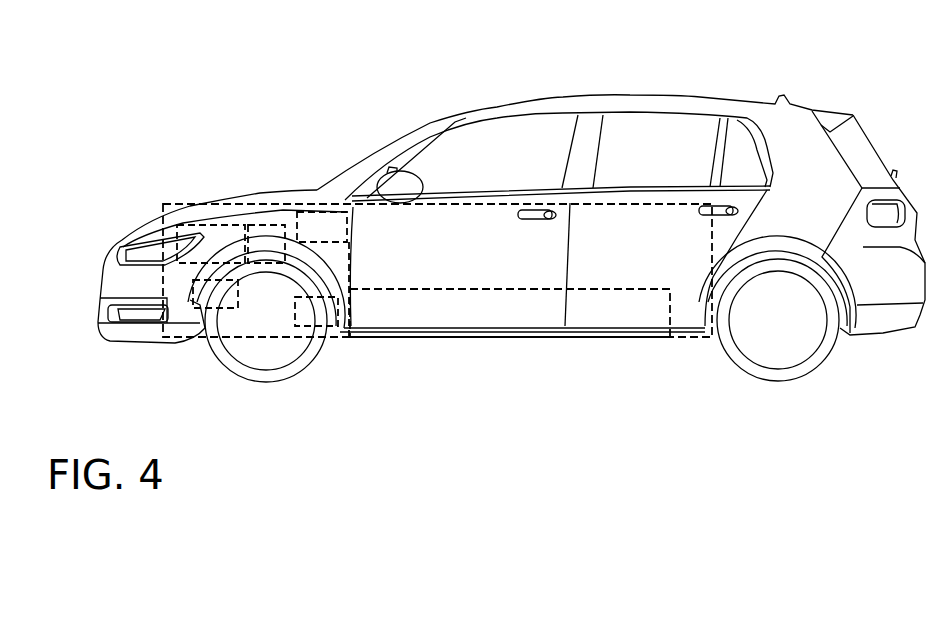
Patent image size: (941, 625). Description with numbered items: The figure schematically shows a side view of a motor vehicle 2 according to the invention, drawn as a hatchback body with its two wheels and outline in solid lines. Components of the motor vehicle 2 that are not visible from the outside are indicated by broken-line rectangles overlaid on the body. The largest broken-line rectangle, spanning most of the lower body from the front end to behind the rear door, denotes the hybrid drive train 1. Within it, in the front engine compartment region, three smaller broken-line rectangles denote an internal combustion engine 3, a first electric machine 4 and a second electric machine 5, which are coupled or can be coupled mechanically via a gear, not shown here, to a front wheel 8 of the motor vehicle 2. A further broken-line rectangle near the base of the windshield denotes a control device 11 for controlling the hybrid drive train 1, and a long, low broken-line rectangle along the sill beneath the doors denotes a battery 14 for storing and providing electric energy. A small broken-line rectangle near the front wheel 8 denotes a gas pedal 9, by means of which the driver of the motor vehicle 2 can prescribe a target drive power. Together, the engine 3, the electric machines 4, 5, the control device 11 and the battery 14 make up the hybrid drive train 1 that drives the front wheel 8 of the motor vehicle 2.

The hybrid drive train 1 is at (177, 203).
The motor vehicle 2 is at (356, 74).
The internal combustion engine 3 is at (220, 231).
The first electric machine 4 is at (270, 231).
The second electric machine 5 is at (213, 300).
The front wheel 8 is at (235, 367).
The gas pedal 9 is at (306, 318).
The control device 11 is at (317, 223).
The battery 14 is at (460, 325).